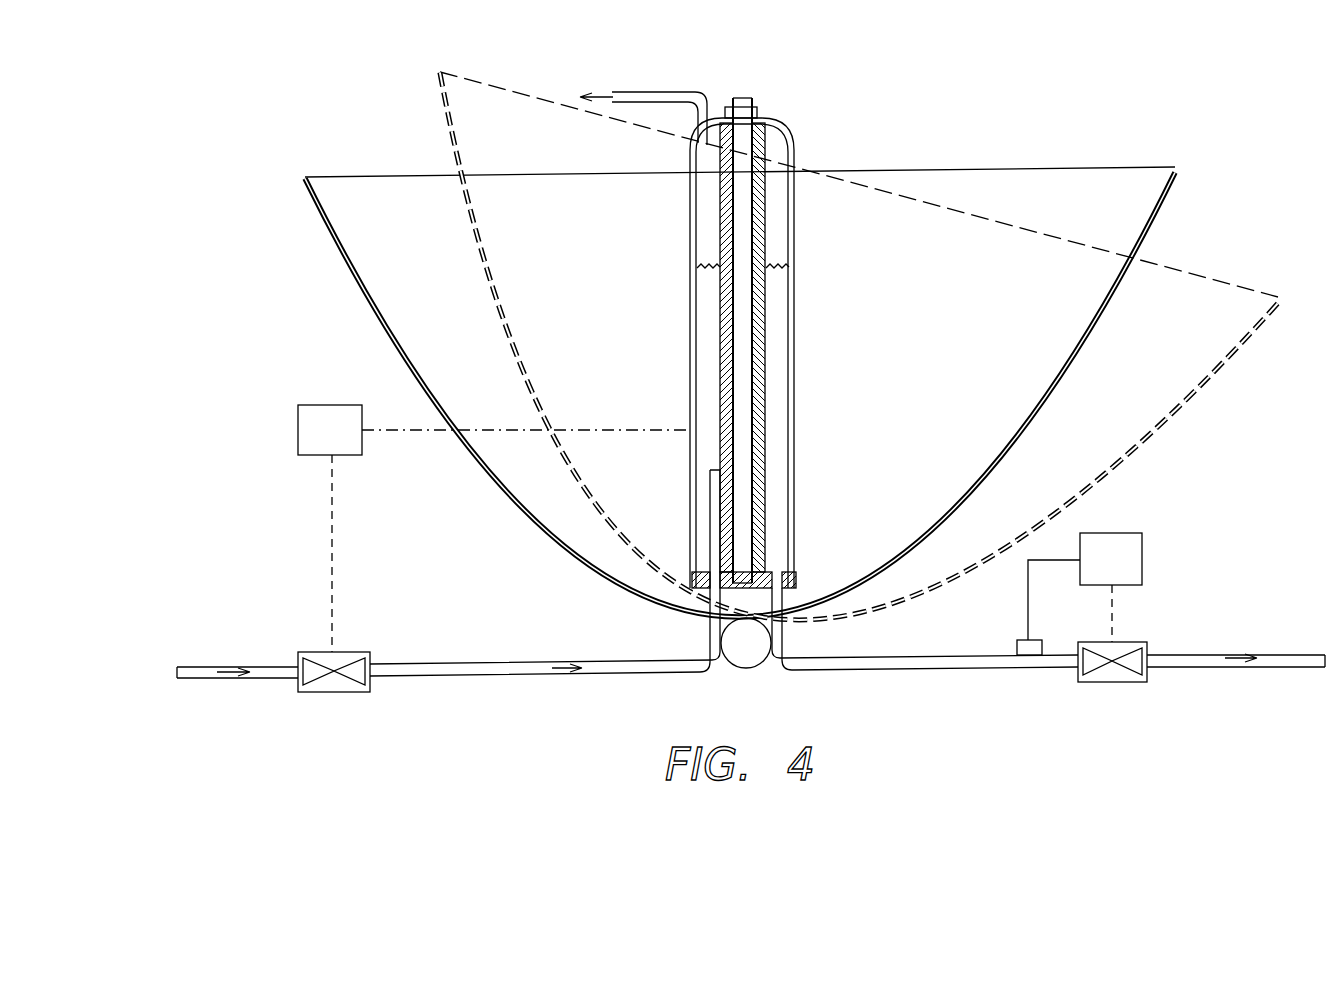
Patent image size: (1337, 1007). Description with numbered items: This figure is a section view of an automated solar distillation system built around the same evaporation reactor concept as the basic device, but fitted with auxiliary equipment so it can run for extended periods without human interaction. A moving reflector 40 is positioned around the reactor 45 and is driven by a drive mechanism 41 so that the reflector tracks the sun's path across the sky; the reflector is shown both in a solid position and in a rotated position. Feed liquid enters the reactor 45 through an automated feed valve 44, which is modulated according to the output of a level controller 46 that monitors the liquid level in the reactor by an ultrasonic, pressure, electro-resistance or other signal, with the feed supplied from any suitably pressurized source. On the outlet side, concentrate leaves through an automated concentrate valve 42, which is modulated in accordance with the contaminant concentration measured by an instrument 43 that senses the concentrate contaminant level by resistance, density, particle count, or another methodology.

The moving reflector 40 is at (1255, 333).
The drive mechanism 41 is at (748, 668).
The concentrate valve 42 is at (1112, 682).
The instrument 43 is at (1142, 560).
The automated feed valve 44 is at (333, 692).
The reactor 45 is at (800, 377).
The level controller 46 is at (298, 430).